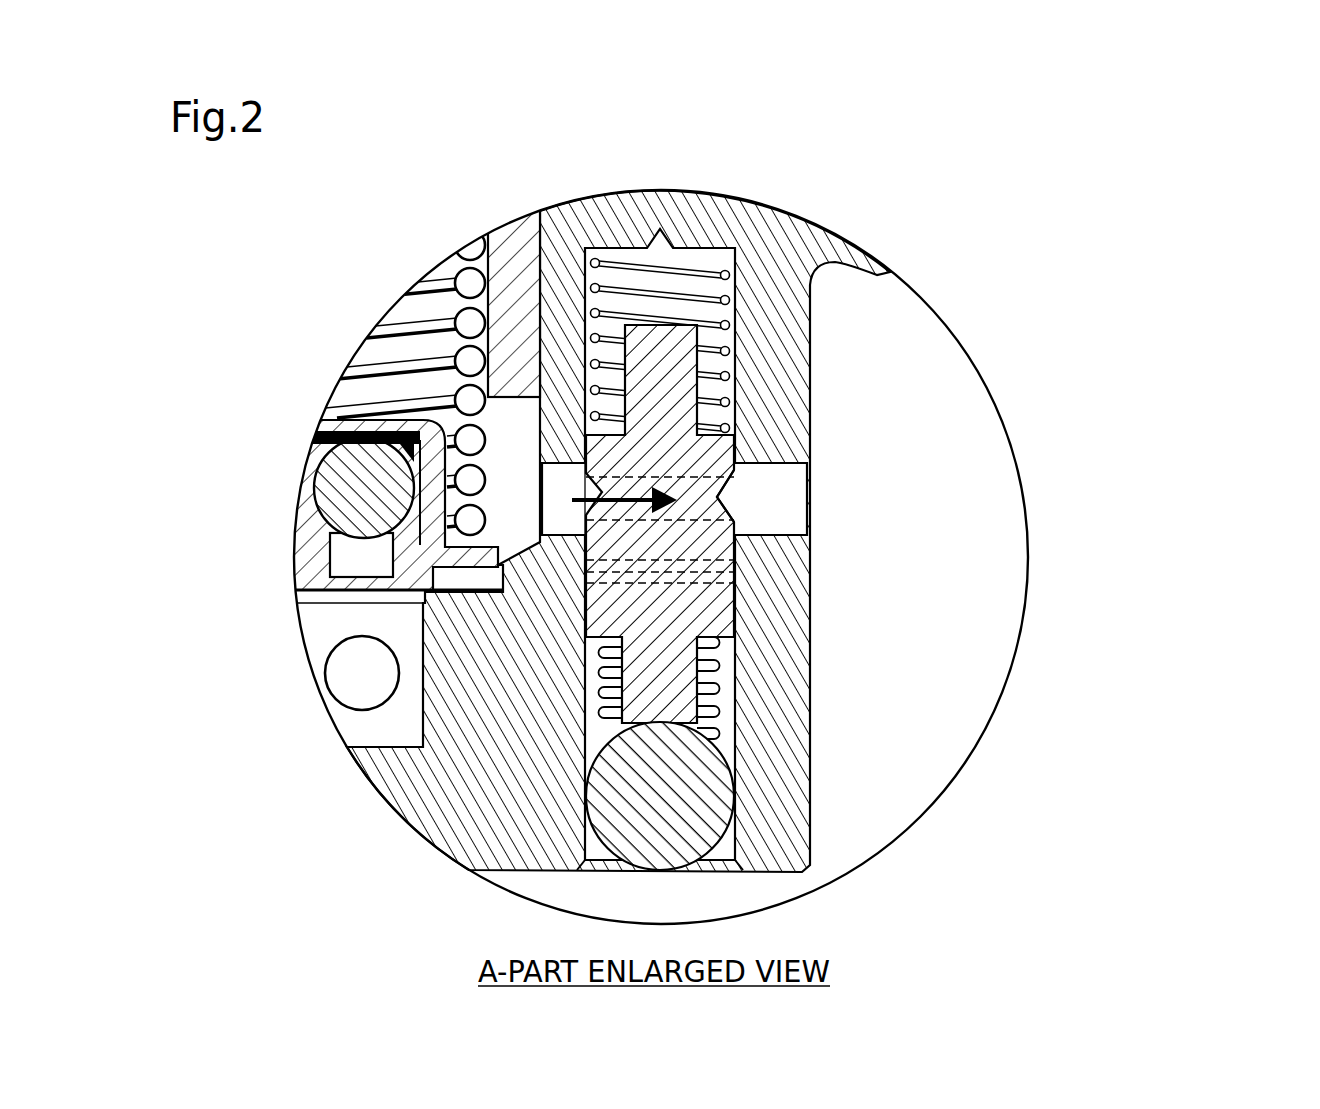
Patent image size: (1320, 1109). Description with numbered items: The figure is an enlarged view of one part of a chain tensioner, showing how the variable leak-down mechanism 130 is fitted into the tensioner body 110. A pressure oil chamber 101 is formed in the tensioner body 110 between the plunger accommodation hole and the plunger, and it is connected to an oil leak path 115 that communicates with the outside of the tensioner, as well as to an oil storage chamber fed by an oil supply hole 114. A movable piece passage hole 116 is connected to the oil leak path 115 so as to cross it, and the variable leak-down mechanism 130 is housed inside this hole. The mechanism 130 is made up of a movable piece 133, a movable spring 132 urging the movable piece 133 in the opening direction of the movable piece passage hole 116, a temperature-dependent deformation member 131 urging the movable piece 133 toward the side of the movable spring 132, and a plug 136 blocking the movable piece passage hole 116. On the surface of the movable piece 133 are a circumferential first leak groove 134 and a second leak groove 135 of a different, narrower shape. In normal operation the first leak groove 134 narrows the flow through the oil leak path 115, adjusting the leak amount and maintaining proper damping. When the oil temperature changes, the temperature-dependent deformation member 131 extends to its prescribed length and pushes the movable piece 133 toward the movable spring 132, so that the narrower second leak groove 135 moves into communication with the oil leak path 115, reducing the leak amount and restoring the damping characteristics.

The tensioner body 110 is at (767, 233).
The pressure oil chamber 101 is at (505, 428).
The oil supply hole 114 is at (362, 666).
The oil leak path 115 is at (553, 495).
The movable piece passage hole 116 is at (592, 740).
The variable leak-down mechanism 130 is at (911, 565).
The temperature-dependent deformation member 131 is at (727, 662).
The movable spring 132 is at (737, 378).
The movable piece 133 is at (708, 468).
The first leak groove 134 is at (720, 498).
The second leak groove 135 is at (731, 573).
The plug 136 is at (665, 806).